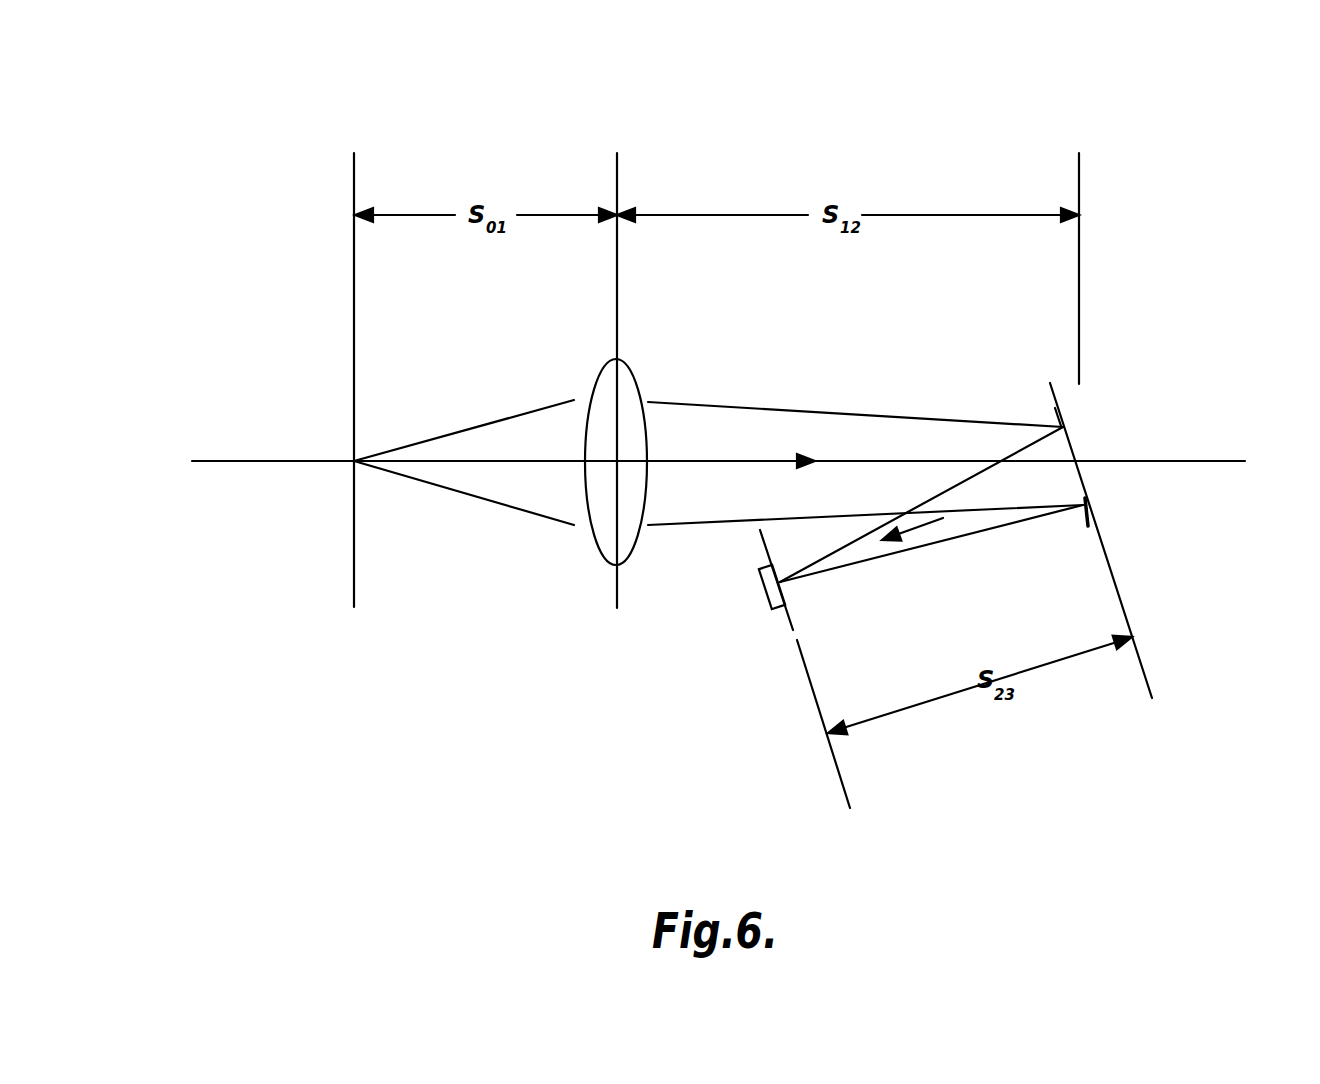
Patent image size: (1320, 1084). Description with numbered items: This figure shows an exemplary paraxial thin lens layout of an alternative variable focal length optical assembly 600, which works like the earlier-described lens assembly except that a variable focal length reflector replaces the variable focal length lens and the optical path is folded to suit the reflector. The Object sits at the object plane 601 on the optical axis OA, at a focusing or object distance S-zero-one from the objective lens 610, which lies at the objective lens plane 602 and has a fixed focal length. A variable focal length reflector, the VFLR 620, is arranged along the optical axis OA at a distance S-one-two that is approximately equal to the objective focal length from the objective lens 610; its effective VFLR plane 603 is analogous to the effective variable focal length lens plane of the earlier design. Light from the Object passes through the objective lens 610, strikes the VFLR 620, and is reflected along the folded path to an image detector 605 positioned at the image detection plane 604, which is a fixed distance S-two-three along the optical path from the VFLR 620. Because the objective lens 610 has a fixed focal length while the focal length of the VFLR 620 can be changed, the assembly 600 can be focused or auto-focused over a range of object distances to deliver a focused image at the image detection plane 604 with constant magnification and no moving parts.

The variable focal length optical assembly 600 is at (290, 150).
The object plane 601 is at (354, 318).
The objective lens plane 602 is at (617, 323).
The effective VFLR plane 603 is at (1052, 386).
The image detection plane 604 is at (757, 543).
The image detector 605 is at (763, 594).
The objective lens 610 is at (603, 507).
The variable focal length reflector 620 is at (1094, 521).
The optical axis OA is at (217, 463).
The object Object is at (354, 461).